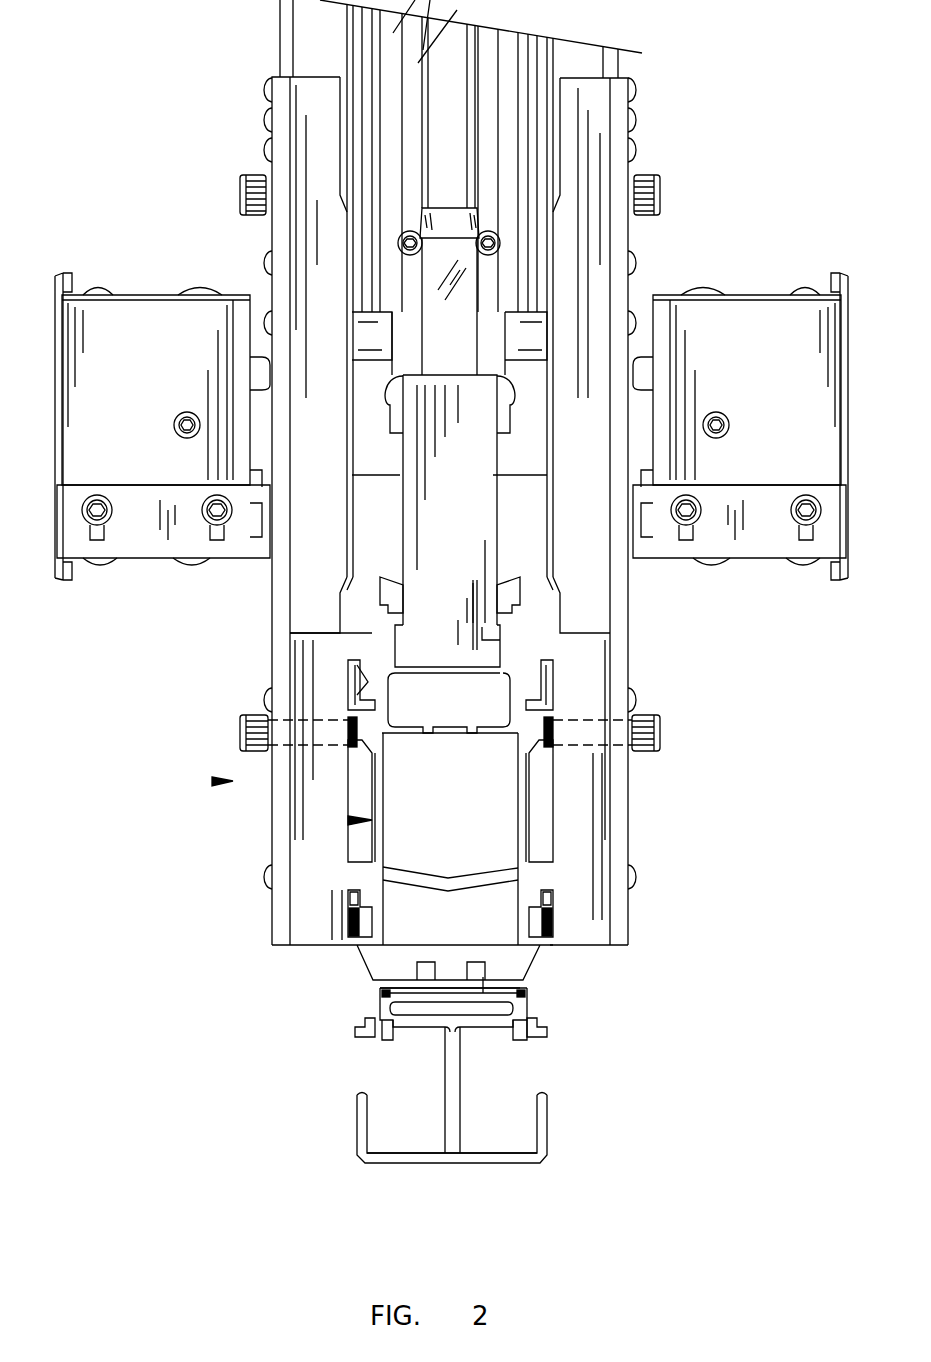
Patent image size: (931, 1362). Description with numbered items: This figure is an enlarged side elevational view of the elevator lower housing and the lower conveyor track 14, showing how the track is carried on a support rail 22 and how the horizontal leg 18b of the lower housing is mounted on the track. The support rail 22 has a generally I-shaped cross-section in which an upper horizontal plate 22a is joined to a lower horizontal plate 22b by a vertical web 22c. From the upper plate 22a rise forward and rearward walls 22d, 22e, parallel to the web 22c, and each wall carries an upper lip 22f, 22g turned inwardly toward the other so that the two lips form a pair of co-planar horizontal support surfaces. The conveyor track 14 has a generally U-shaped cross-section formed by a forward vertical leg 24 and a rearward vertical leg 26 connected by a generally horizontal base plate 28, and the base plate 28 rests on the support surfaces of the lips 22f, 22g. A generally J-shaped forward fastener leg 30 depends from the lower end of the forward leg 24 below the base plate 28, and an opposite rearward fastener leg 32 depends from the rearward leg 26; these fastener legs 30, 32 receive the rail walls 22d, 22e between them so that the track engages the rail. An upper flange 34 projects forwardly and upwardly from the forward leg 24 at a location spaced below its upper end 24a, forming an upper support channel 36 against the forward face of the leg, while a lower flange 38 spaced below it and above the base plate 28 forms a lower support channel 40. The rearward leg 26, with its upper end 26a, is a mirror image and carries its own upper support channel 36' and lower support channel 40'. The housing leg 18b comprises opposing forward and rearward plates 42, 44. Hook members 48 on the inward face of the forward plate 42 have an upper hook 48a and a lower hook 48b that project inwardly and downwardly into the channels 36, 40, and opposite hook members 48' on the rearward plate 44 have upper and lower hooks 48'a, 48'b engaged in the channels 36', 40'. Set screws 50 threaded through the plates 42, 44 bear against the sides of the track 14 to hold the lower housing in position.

The conveyor track 14 is at (348, 820).
The horizontal leg of lower housing 18b is at (215, 782).
The support rail 22 is at (560, 1122).
The upper horizontal plate 22a is at (417, 1028).
The lower horizontal plate 22b is at (422, 1162).
The vertical web 22c is at (460, 1077).
The forward wall 22d is at (383, 1043).
The rearward wall 22e is at (527, 1047).
The upper lip 22f is at (403, 1000).
The upper lip 22g is at (483, 977).
The forward vertical leg 24 is at (378, 788).
The upper end of forward leg 24a is at (387, 598).
The rearward vertical leg 26 is at (527, 800).
The upper end of rearward leg 26a is at (500, 592).
The base plate 28 is at (455, 975).
The forward fastener leg 30 is at (378, 1002).
The rearward fastener leg 32 is at (527, 1012).
The upper flange 34 is at (358, 700).
The upper support channel 36 is at (269, 667).
The upper support channel 36' is at (630, 706).
The lower flange 38 is at (363, 933).
The lower support channel 40 is at (260, 908).
The lower support channel 40' is at (629, 911).
The forward plate 42 is at (283, 591).
The rearward plate 44 is at (618, 617).
The hook member 48 is at (241, 801).
The hook member 48' is at (627, 801).
The upper hook 48a is at (360, 692).
The upper hook 48'a is at (659, 671).
The lower hook 48b is at (348, 888).
The lower hook 48'b is at (629, 892).
The set screw 50 is at (238, 733).